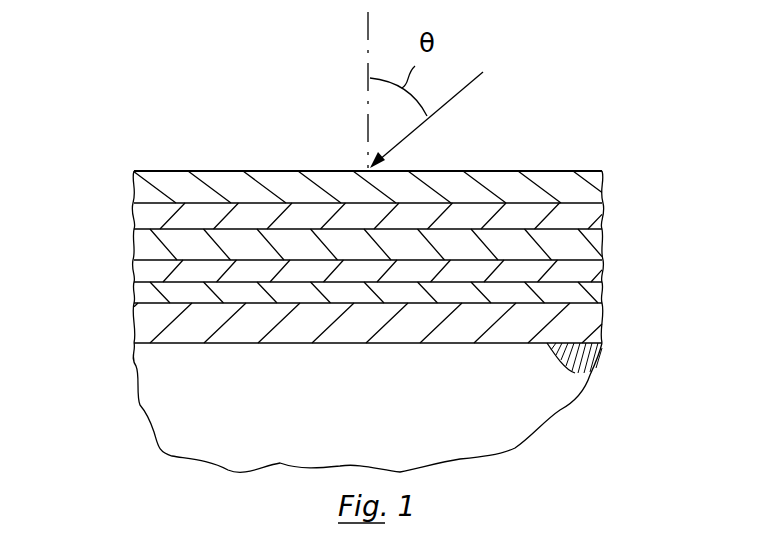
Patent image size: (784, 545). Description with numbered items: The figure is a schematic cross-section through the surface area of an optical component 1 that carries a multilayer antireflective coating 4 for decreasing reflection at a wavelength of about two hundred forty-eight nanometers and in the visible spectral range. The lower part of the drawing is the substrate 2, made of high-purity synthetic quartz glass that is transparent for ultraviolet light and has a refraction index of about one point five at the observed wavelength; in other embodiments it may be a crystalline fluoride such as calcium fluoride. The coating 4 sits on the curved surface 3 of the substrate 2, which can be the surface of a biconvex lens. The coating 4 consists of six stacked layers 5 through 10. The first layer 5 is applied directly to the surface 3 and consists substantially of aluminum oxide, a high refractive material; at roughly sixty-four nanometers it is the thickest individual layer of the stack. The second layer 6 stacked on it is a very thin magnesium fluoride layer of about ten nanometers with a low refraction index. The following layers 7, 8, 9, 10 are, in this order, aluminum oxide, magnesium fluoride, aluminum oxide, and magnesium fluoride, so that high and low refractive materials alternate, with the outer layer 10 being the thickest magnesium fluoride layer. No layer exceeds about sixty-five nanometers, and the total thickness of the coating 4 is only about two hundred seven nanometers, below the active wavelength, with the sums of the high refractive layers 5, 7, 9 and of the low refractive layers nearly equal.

The optical component 1 is at (122, 90).
The substrate 2 is at (530, 418).
The curved surface 3 is at (517, 345).
The multilayer antireflective coating 4 is at (99, 345).
The first layer 5 is at (603, 324).
The second layer 6 is at (603, 292).
The third layer 7 is at (603, 270).
The fourth layer 8 is at (603, 241).
The fifth layer 9 is at (603, 213).
The outer layer 10 is at (603, 180).